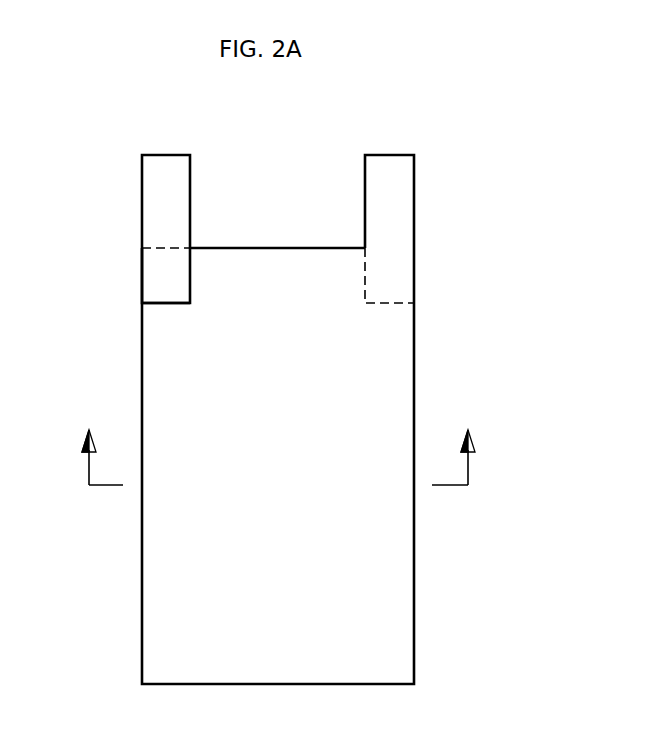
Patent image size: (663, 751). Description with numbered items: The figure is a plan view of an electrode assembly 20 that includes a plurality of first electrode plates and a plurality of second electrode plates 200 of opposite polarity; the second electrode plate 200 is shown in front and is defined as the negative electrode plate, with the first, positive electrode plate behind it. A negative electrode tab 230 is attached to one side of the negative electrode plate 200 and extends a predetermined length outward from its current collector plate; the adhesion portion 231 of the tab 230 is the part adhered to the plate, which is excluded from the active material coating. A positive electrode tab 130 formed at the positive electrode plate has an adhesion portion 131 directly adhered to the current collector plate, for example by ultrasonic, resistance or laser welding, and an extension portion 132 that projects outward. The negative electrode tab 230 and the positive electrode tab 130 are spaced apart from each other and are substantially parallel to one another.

The electrode assembly 20 is at (425, 144).
The second electrode plate 200 is at (420, 624).
The negative electrode tab 230 is at (145, 198).
The adhesion portion 231 is at (145, 276).
The positive electrode tab 130 is at (503, 198).
The adhesion portion 131 is at (410, 276).
The extension portion 132 is at (410, 199).